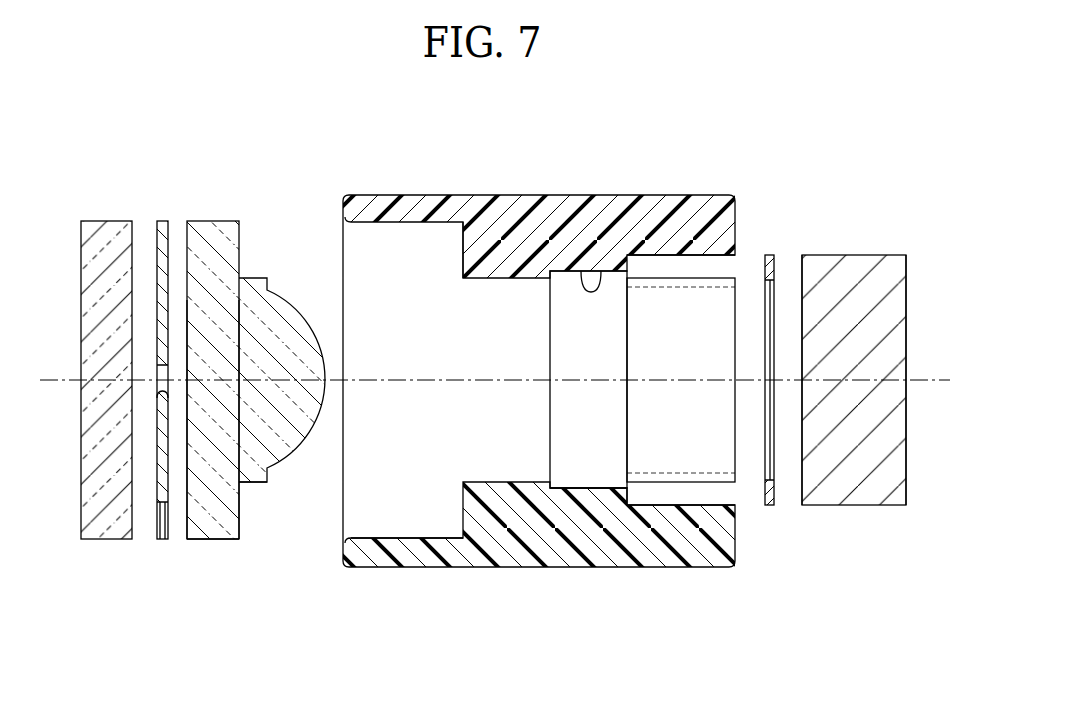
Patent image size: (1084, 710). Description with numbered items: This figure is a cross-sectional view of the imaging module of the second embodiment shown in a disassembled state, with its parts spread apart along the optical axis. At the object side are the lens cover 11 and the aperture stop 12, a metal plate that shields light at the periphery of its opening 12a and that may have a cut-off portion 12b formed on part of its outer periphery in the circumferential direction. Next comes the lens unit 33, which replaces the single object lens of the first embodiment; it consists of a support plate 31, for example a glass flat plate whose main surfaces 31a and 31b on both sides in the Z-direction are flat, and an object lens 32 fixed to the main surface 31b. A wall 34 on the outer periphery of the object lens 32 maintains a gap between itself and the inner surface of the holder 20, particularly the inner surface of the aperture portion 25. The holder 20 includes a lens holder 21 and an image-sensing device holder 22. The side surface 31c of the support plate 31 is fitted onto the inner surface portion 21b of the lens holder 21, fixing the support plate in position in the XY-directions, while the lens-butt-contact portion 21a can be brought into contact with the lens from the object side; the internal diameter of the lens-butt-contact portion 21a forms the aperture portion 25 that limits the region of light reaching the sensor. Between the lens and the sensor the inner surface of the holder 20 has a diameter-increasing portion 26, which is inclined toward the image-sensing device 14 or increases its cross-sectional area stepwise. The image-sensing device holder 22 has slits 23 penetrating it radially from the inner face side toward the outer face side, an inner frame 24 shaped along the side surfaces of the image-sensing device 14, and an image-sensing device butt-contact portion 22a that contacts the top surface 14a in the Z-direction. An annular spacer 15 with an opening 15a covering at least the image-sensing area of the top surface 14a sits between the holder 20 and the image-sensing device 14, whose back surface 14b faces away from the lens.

The lens cover 11 is at (104, 230).
The aperture stop 12 is at (149, 393).
The opening 12a is at (166, 391).
The cut-off portion 12b is at (167, 538).
The lens unit 33 is at (198, 120).
The support plate 31 is at (213, 232).
The main surface 31a is at (189, 525).
The main surface 31b is at (242, 514).
The side surface 31c is at (213, 530).
The object lens 32 is at (291, 300).
The wall 34 is at (253, 484).
The holder 20 is at (529, 195).
The lens holder 21 is at (407, 540).
The lens-butt-contact portion 21a is at (463, 248).
The inner surface portion 21b is at (371, 537).
The image-sensing device holder 22 is at (697, 543).
The image-sensing device butt-contact portion 22a is at (638, 505).
The slits 23 is at (720, 266).
The inner frame 24 is at (722, 443).
The aperture portion 25 is at (500, 473).
The diameter-increasing portion 26 is at (601, 280).
The spacer 15 is at (771, 254).
The opening 15a is at (767, 472).
The image-sensing device 14 is at (858, 270).
The top surface 14a is at (802, 280).
The back surface 14b is at (907, 290).